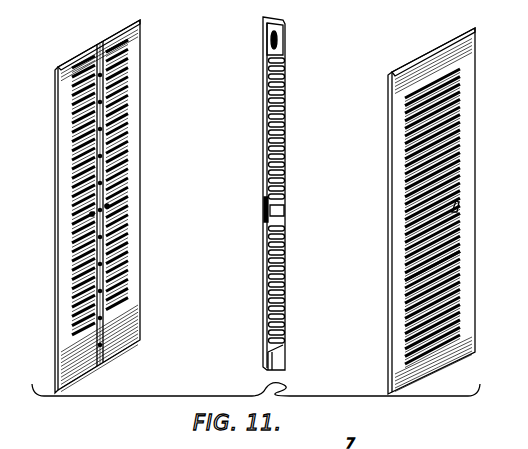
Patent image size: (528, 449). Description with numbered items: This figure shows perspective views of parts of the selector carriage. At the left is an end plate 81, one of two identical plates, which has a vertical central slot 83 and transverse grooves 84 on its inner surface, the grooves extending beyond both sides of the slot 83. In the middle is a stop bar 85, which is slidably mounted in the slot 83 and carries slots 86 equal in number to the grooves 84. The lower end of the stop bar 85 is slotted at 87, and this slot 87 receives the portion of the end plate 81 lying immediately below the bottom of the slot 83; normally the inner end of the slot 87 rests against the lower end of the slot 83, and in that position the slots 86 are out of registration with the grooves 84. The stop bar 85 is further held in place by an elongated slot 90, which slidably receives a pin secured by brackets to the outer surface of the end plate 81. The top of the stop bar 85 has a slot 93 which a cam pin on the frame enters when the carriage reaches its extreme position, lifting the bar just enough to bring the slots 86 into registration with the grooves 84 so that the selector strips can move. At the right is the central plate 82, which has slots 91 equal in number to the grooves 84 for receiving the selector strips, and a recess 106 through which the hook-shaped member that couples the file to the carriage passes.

The end plate 81 is at (56, 306).
The central plate 82 is at (474, 300).
The vertical central slot 83 is at (100, 46).
The transverse grooves 84 is at (126, 48).
The stop bar 85 is at (286, 53).
The slots 86 is at (284, 248).
The slot 87 is at (270, 355).
The elongated slot 90 is at (265, 211).
The slots 91 is at (461, 275).
The slot 93 is at (272, 40).
The recess 106 is at (459, 207).